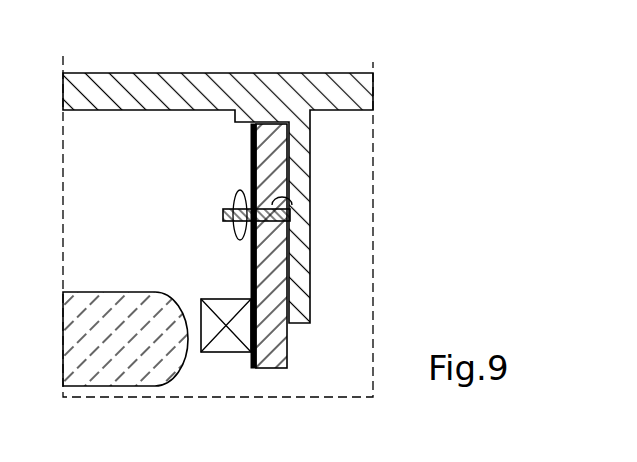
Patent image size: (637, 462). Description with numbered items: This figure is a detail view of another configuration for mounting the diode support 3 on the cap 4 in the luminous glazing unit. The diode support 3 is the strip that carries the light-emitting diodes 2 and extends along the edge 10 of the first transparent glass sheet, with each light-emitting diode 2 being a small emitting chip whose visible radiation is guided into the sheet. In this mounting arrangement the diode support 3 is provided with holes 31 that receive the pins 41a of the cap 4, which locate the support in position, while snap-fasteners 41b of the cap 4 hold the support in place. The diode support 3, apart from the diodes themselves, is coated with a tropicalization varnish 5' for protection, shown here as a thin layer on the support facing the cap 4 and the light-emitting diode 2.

The cap 4 is at (185, 92).
The diode support 3 is at (248, 265).
The tropicalization varnish 5' is at (228, 246).
The pins of the cap 41a is at (286, 219).
The snap-fasteners 41b is at (242, 190).
The holes 31 is at (276, 199).
The light-emitting diode 2 is at (228, 298).
The edge 10 is at (191, 359).